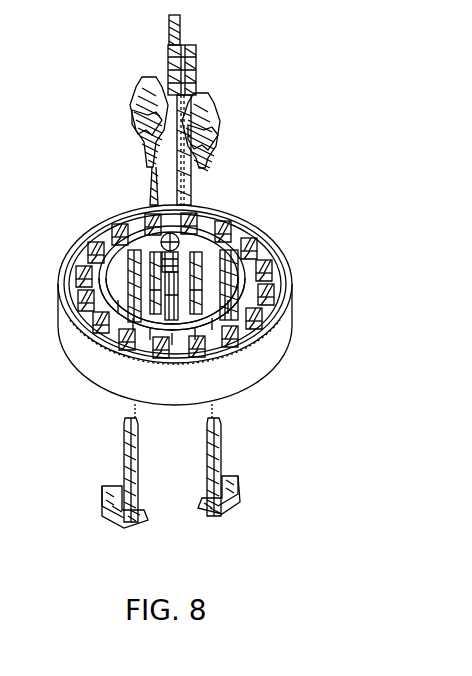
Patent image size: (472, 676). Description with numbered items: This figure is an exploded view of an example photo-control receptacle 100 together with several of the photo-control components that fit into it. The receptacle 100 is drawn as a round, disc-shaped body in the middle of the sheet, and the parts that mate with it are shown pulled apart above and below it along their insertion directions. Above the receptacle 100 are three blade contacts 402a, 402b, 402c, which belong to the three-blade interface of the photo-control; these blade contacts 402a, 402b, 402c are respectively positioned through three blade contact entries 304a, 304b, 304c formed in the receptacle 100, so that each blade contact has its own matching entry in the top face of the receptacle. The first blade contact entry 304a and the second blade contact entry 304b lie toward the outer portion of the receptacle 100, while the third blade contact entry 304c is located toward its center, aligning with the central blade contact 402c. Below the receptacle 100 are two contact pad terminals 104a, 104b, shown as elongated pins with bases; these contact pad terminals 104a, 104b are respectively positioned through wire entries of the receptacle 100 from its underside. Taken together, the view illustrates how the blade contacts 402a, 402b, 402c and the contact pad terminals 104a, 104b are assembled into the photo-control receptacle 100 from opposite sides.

The photo-control receptacle 100 is at (203, 292).
The contact pad terminal 104a is at (94, 520).
The contact pad terminal 104b is at (229, 515).
The blade contact entry 304a is at (122, 209).
The blade contact entry 304b is at (228, 226).
The blade contact entry 304c is at (155, 279).
The blade contact 402a is at (114, 79).
The blade contact 402b is at (225, 116).
The blade contact 402c is at (208, 60).